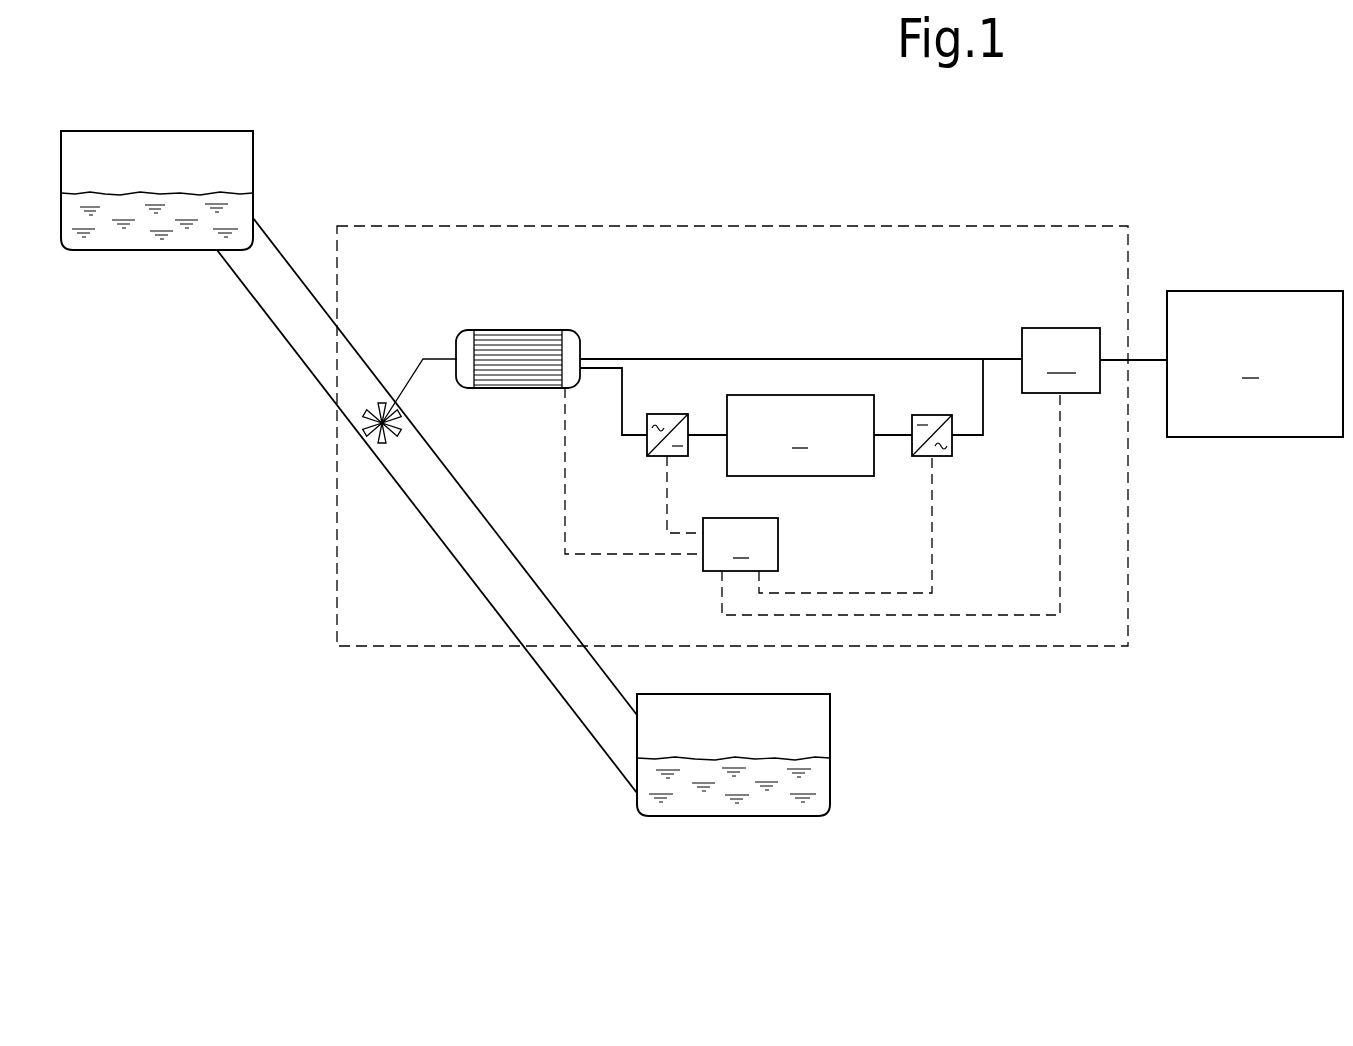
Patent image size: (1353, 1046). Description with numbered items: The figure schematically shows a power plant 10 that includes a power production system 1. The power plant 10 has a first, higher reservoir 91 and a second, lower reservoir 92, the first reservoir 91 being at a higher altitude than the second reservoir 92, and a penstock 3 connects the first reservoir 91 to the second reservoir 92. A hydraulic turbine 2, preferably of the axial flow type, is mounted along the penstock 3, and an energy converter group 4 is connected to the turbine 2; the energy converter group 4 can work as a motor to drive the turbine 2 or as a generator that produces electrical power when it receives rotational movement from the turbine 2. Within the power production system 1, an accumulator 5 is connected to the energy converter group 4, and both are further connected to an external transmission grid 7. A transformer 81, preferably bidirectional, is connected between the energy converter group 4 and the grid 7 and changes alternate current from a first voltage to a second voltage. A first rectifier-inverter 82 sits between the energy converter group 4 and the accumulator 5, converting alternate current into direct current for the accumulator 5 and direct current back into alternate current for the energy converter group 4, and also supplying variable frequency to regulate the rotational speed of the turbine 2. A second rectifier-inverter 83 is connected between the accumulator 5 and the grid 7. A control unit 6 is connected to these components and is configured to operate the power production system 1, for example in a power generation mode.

The power production system 1 is at (687, 226).
The hydraulic turbine 2 is at (357, 423).
The penstock 3 is at (290, 314).
The energy converter group 4 is at (517, 327).
The accumulator 5 is at (800, 435).
The control unit 6 is at (812, 501).
The external transmission grid 7 is at (1255, 364).
The power plant 10 is at (418, 167).
The transformer 81 is at (1061, 360).
The first rectifier-inverter 82 is at (657, 456).
The second rectifier-inverter 83 is at (940, 456).
The first reservoir 91 is at (108, 233).
The second reservoir 92 is at (717, 788).